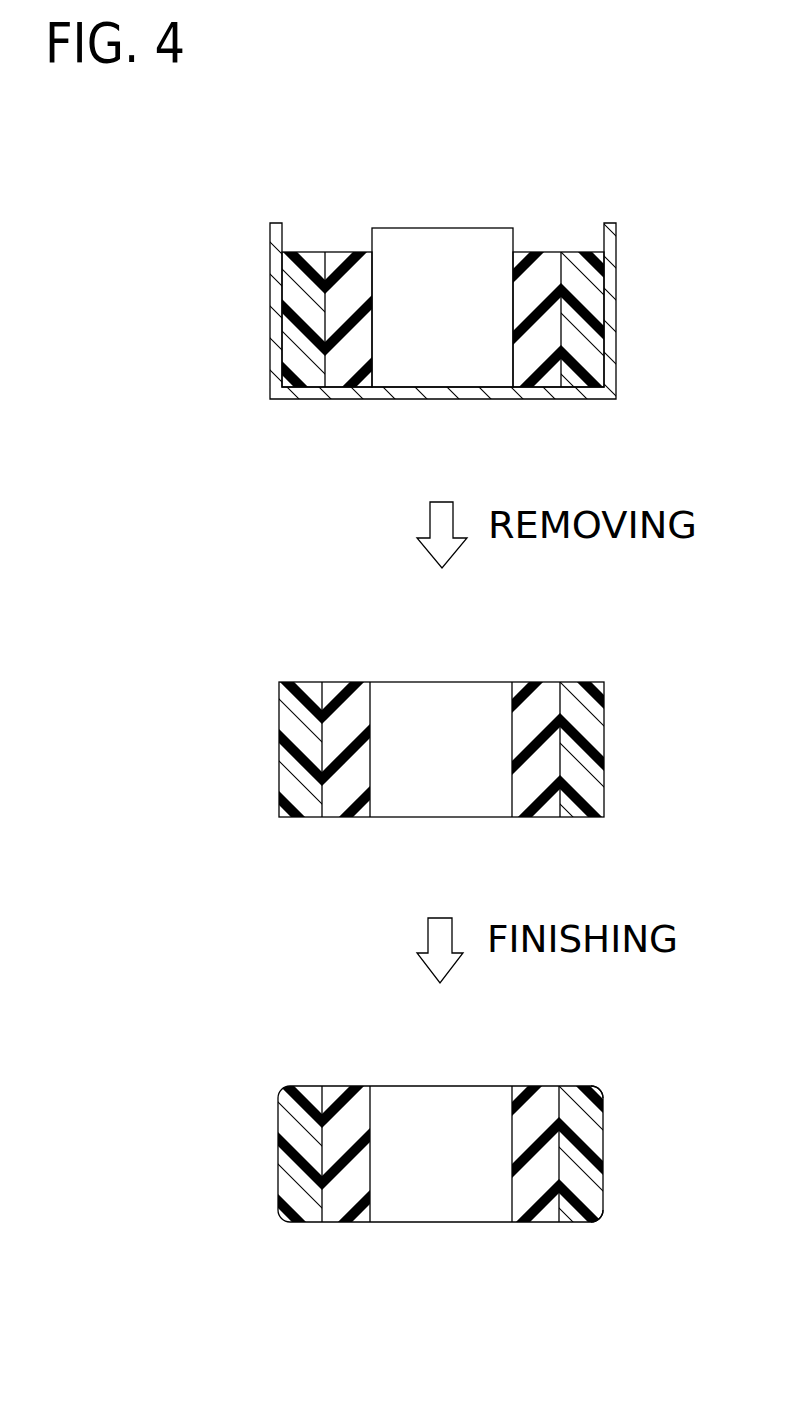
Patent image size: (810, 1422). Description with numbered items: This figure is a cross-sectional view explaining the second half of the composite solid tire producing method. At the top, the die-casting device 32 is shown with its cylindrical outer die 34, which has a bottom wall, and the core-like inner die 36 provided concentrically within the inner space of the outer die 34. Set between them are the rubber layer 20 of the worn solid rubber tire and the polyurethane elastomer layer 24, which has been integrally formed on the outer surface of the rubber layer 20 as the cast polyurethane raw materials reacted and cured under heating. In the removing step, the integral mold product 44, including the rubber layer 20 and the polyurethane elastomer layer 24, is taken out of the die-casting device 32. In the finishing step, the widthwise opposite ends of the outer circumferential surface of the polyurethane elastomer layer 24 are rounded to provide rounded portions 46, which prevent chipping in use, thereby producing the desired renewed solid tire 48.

The rubber layer 20 is at (550, 275).
The polyurethane elastomer layer 24 is at (597, 277).
The die-casting device 32 is at (434, 416).
The outer die 34 is at (610, 342).
The inner die 36 is at (442, 258).
The integral mold product 44 is at (620, 652).
The rounded portions 46 is at (600, 1088).
The renewed solid tire 48 is at (278, 1060).